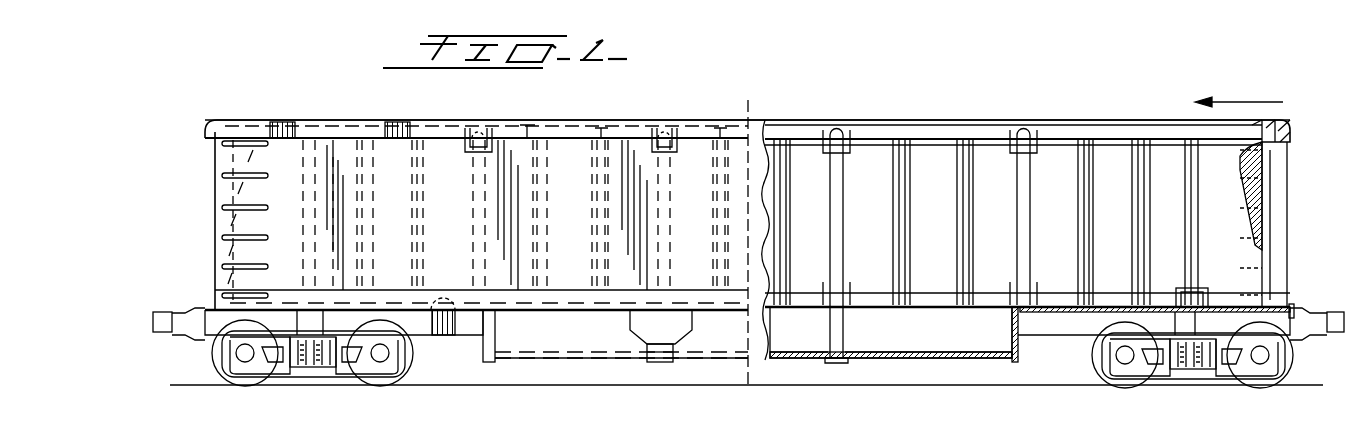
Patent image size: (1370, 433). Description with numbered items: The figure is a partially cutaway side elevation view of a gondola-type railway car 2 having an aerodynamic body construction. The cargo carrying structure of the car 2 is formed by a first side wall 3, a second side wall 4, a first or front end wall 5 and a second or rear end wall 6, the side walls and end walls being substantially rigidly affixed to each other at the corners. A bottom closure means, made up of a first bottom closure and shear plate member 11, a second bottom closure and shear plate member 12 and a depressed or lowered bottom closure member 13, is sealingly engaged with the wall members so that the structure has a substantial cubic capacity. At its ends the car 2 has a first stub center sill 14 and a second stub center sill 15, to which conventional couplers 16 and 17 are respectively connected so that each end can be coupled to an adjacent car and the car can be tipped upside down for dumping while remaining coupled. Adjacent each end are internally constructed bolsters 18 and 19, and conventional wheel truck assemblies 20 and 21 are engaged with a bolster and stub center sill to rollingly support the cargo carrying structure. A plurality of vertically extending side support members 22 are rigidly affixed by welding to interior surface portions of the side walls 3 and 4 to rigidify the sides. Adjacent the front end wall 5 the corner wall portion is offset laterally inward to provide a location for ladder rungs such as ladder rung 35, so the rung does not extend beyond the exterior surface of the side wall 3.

The gondola-type railway car 2 is at (836, 117).
The first side wall 3 is at (573, 172).
The second side wall 4 is at (1163, 158).
The first or front end wall 5 is at (213, 178).
The second or rear end wall 6 is at (1288, 200).
The first bottom closure and shear plate member 11 is at (452, 318).
The second bottom closure and shear plate member 12 is at (1058, 310).
The depressed or lowered bottom closure member 13 is at (922, 352).
The first stub center sill 14 is at (212, 315).
The second stub center sill 15 is at (1290, 315).
The coupler 16 is at (176, 318).
The coupler 17 is at (1337, 310).
The bolster 18 is at (337, 286).
The bolster 19 is at (1200, 289).
The truck assembly 20 is at (309, 376).
The truck assembly 21 is at (1191, 376).
The vertically extending side support member 22 is at (790, 338).
The ladder rung 35 is at (270, 138).